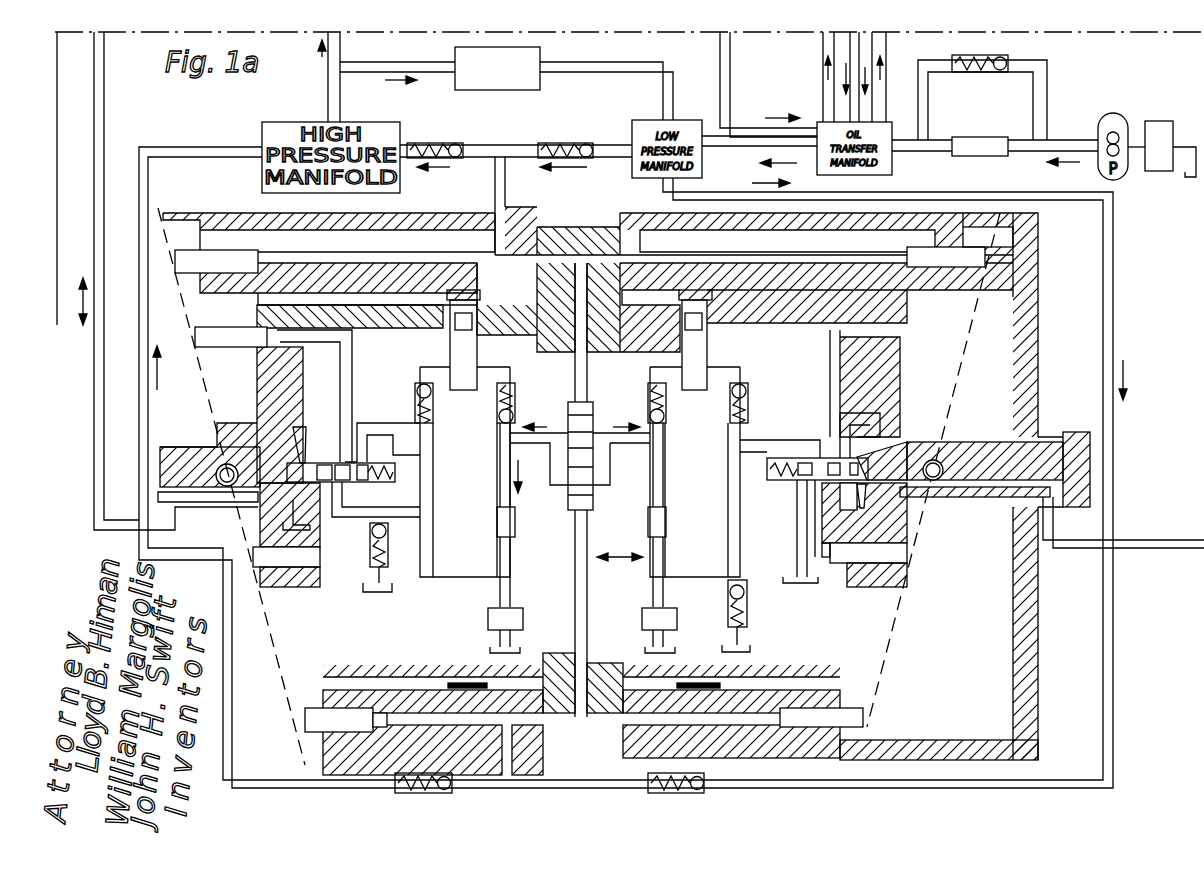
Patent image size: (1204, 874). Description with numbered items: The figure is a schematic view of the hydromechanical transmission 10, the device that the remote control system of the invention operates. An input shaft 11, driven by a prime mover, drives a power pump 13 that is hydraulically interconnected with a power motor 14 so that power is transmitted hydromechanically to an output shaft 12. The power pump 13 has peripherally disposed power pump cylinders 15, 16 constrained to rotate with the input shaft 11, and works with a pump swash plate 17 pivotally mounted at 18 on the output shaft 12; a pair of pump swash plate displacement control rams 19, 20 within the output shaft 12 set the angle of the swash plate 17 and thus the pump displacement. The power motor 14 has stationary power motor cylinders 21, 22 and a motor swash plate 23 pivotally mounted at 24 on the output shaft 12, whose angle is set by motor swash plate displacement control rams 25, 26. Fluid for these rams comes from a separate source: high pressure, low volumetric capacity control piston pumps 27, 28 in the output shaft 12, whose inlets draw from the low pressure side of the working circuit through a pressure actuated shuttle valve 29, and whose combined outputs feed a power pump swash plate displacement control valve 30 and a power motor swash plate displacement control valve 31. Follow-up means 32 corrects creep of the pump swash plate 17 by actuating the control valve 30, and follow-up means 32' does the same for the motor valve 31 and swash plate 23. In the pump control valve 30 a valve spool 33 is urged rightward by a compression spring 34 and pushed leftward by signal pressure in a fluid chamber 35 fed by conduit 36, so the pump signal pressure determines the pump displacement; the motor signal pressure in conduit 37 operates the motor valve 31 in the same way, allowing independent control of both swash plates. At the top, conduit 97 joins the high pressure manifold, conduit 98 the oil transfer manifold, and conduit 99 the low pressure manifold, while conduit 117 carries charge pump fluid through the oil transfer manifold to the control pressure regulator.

The hydromechanical transmission 10 is at (1130, 682).
The input shaft 11 is at (1078, 437).
The output shaft 12 is at (198, 448).
The power pump 13 is at (930, 213).
The power motor 14 is at (433, 214).
The power pump cylinder 15 is at (930, 281).
The power pump cylinder 16 is at (840, 711).
The pump swash plate 17 is at (886, 652).
The pivotal mounting of pump swash plate 18 is at (940, 460).
The pump swash plate displacement control ram 19 is at (928, 328).
The pump swash plate displacement control ram 20 is at (856, 566).
The power motor cylinder 21 is at (216, 285).
The power motor cylinder 22 is at (346, 720).
The motor swash plate 23 is at (287, 681).
The pivotal mounting of motor swash plate 24 is at (222, 486).
The motor swash plate displacement control ram 25 is at (228, 335).
The motor swash plate displacement control ram 26 is at (297, 574).
The control piston pump 27 is at (452, 337).
The control piston pump 28 is at (697, 372).
The pressure actuated shuttle valve 29 is at (594, 406).
The power pump swash plate displacement control valve 30 is at (789, 486).
The power motor swash plate displacement control valve 31 is at (363, 486).
The follow-up means 32 is at (864, 513).
The follow-up means 32' is at (313, 427).
The valve spool 33 is at (800, 457).
The compression spring 34 is at (768, 462).
The fluid chamber 35 is at (903, 447).
The conduit 36 is at (1203, 68).
The conduit 37 is at (101, 150).
The conduit 97 is at (329, 82).
The conduit 98 is at (739, 76).
The conduit 99 is at (724, 141).
The inlet conduit 117 is at (843, 44).